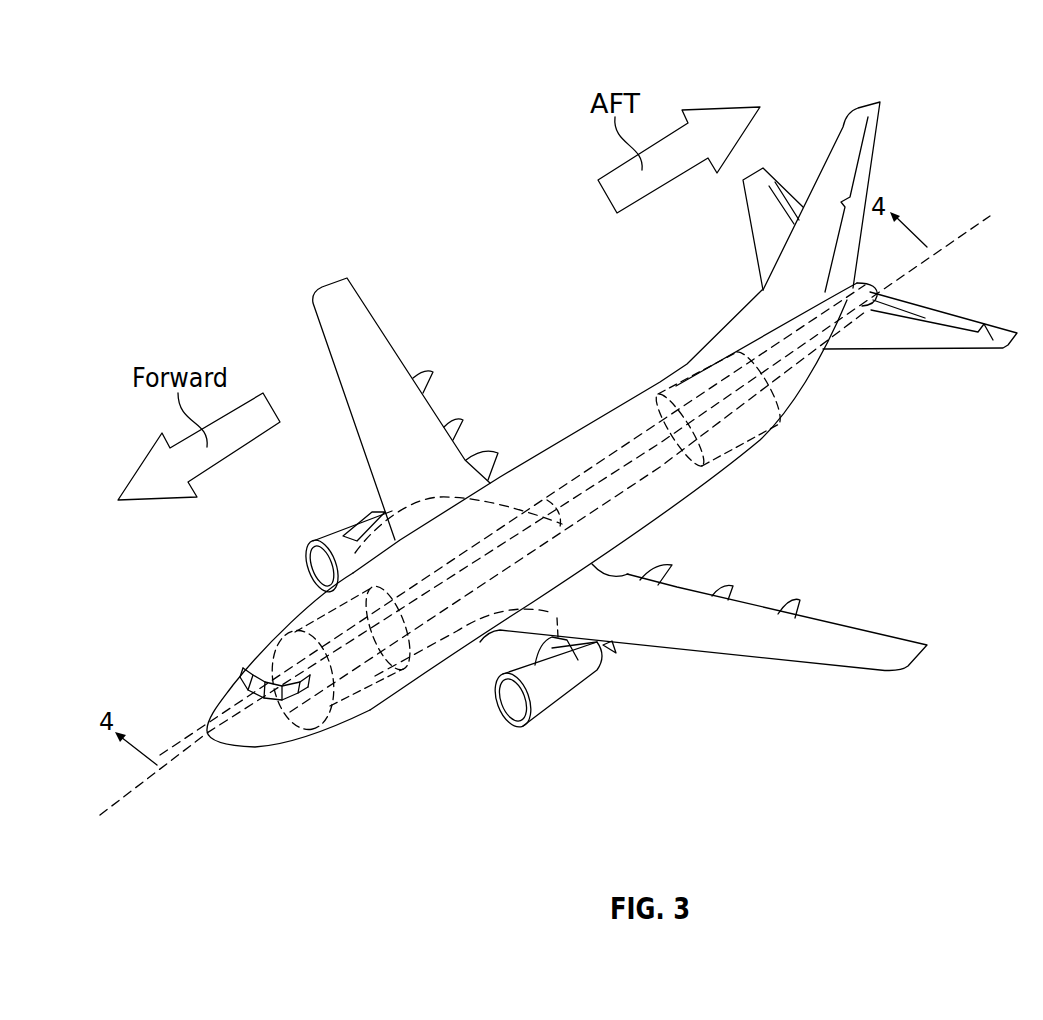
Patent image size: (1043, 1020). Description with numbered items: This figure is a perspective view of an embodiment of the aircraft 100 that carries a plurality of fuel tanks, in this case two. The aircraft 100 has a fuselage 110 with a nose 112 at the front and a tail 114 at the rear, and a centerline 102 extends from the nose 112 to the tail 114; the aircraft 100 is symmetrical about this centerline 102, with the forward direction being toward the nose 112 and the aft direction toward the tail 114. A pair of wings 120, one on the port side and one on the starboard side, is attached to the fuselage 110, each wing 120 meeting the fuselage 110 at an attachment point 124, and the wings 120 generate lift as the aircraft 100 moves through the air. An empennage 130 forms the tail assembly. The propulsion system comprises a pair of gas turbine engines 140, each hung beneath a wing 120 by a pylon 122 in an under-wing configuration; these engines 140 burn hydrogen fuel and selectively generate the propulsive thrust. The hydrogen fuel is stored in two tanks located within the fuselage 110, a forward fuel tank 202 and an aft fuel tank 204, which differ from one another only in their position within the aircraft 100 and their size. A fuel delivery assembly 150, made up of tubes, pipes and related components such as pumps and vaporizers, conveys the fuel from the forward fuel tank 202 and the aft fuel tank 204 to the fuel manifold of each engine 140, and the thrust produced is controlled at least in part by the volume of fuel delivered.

The aircraft 100 is at (505, 206).
The centerline 102 is at (962, 237).
The fuselage 110 is at (285, 735).
The nose 112 is at (220, 745).
The tail 114 is at (876, 280).
The wing 120 is at (353, 327).
The pylon 122 is at (373, 520).
The attachment point 124 is at (617, 568).
The empennage 130 is at (925, 155).
The engine 140 is at (333, 540).
The fuel delivery assembly 150 is at (560, 523).
The forward fuel tank 202 is at (323, 633).
The aft fuel tank 204 is at (697, 393).